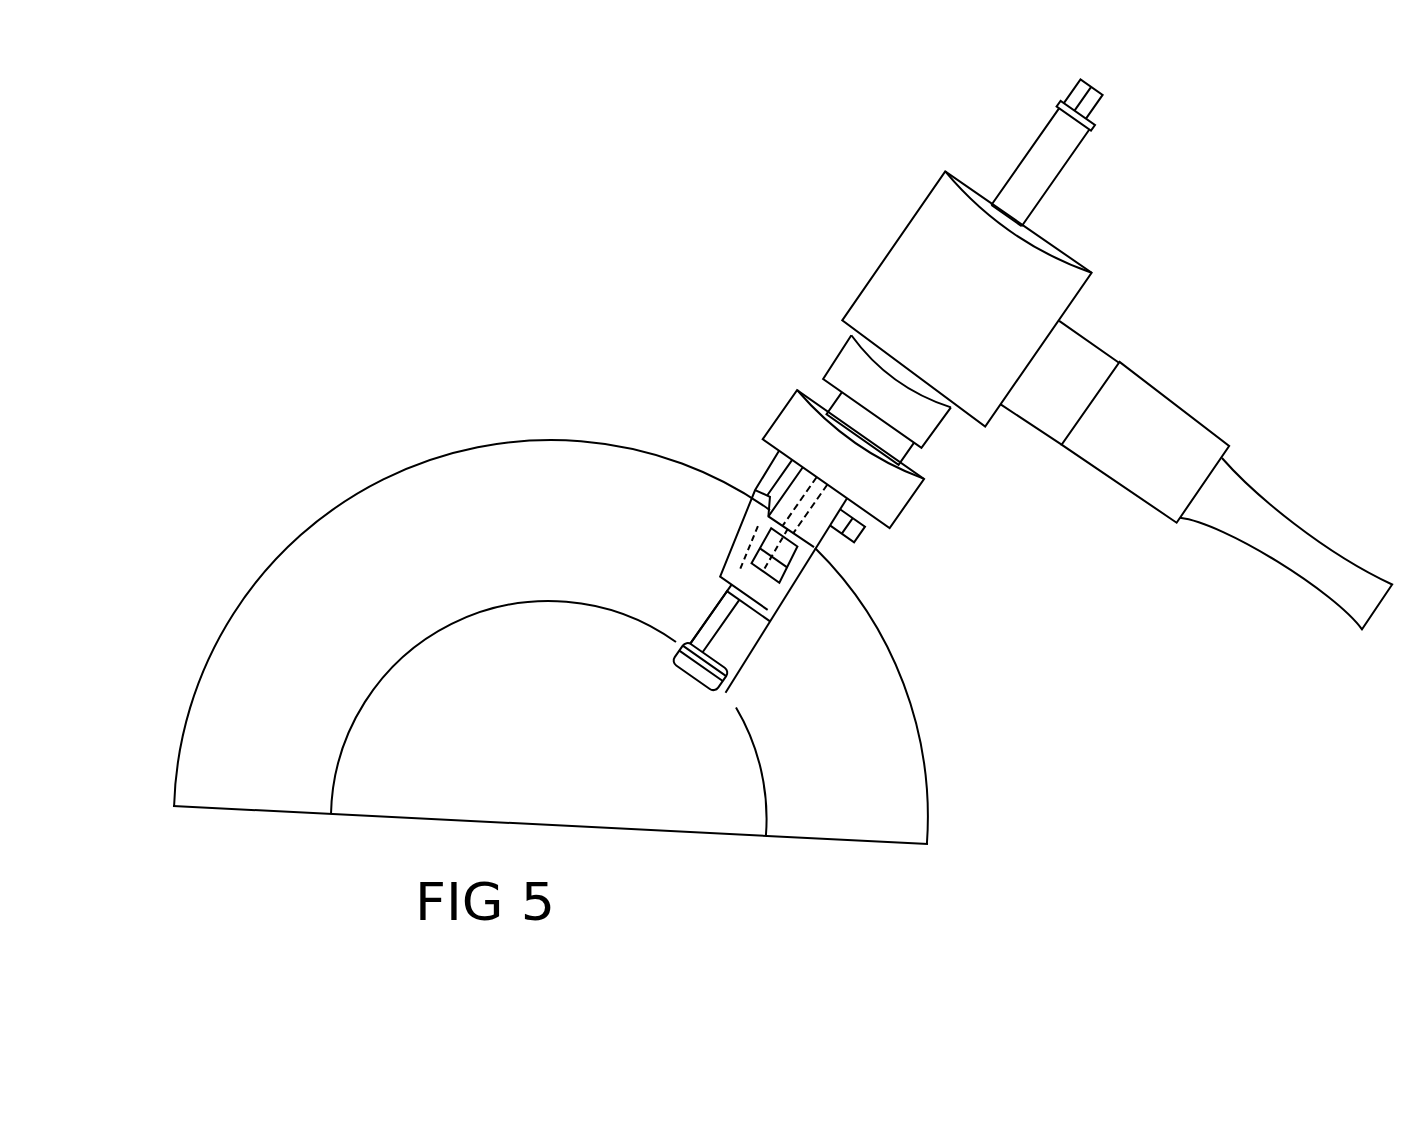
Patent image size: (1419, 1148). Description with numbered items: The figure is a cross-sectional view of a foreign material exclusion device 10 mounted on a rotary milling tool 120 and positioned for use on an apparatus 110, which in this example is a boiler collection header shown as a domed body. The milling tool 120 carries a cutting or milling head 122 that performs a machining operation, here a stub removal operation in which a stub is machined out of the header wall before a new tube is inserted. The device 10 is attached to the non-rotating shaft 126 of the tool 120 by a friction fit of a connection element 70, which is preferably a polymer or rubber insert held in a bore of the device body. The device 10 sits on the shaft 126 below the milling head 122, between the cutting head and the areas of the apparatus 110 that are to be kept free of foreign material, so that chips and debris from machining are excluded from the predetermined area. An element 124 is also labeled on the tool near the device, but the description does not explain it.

The foreign material exclusion device 10 is at (750, 688).
The connection element 70 is at (768, 494).
The apparatus 110 is at (394, 552).
The milling tool 120 is at (879, 229).
The cutting head 122 is at (924, 523).
The inner member 124 is at (731, 553).
The non-rotating shaft 126 is at (691, 613).